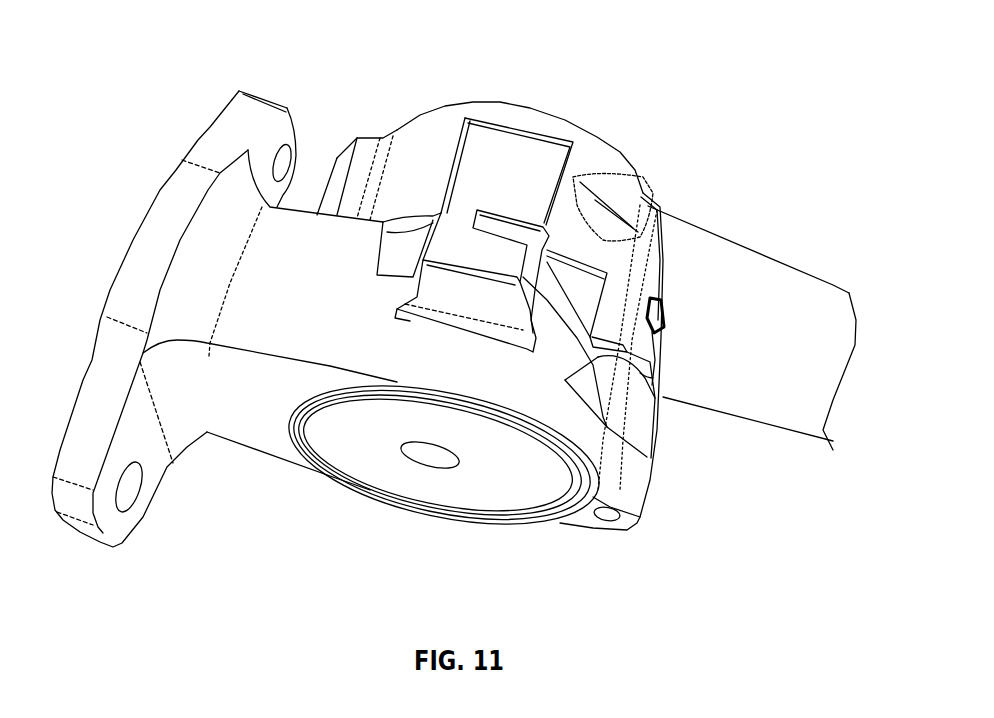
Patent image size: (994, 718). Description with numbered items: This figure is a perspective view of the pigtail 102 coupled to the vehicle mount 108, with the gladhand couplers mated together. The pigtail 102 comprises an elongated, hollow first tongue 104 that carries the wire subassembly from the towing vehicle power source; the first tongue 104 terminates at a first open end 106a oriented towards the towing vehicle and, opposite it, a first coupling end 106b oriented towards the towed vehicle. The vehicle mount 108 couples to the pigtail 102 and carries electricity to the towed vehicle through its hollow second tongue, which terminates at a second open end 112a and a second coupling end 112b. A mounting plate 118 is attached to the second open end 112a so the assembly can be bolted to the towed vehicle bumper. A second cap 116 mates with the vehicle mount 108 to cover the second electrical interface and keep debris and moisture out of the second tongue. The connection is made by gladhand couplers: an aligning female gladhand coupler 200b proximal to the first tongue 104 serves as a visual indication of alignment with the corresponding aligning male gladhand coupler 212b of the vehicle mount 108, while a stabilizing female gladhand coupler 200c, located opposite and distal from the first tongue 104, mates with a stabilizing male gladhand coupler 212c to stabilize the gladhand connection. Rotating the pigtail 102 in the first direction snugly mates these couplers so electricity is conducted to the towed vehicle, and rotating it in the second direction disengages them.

The pigtail 102 is at (668, 53).
The first tongue 104 is at (743, 256).
The first open end 106a is at (833, 293).
The first coupling end 106b is at (517, 113).
The vehicle mount 108 is at (256, 524).
The second open end 112a is at (272, 200).
The second coupling end 112b is at (557, 420).
The second cap 116 is at (424, 486).
The mounting plate 118 is at (155, 193).
The aligning female gladhand coupler 200b is at (650, 297).
The stabilizing female gladhand coupler 200c is at (470, 233).
The aligning male gladhand coupler 212b is at (663, 332).
The stabilizing male gladhand coupler 212c is at (632, 428).